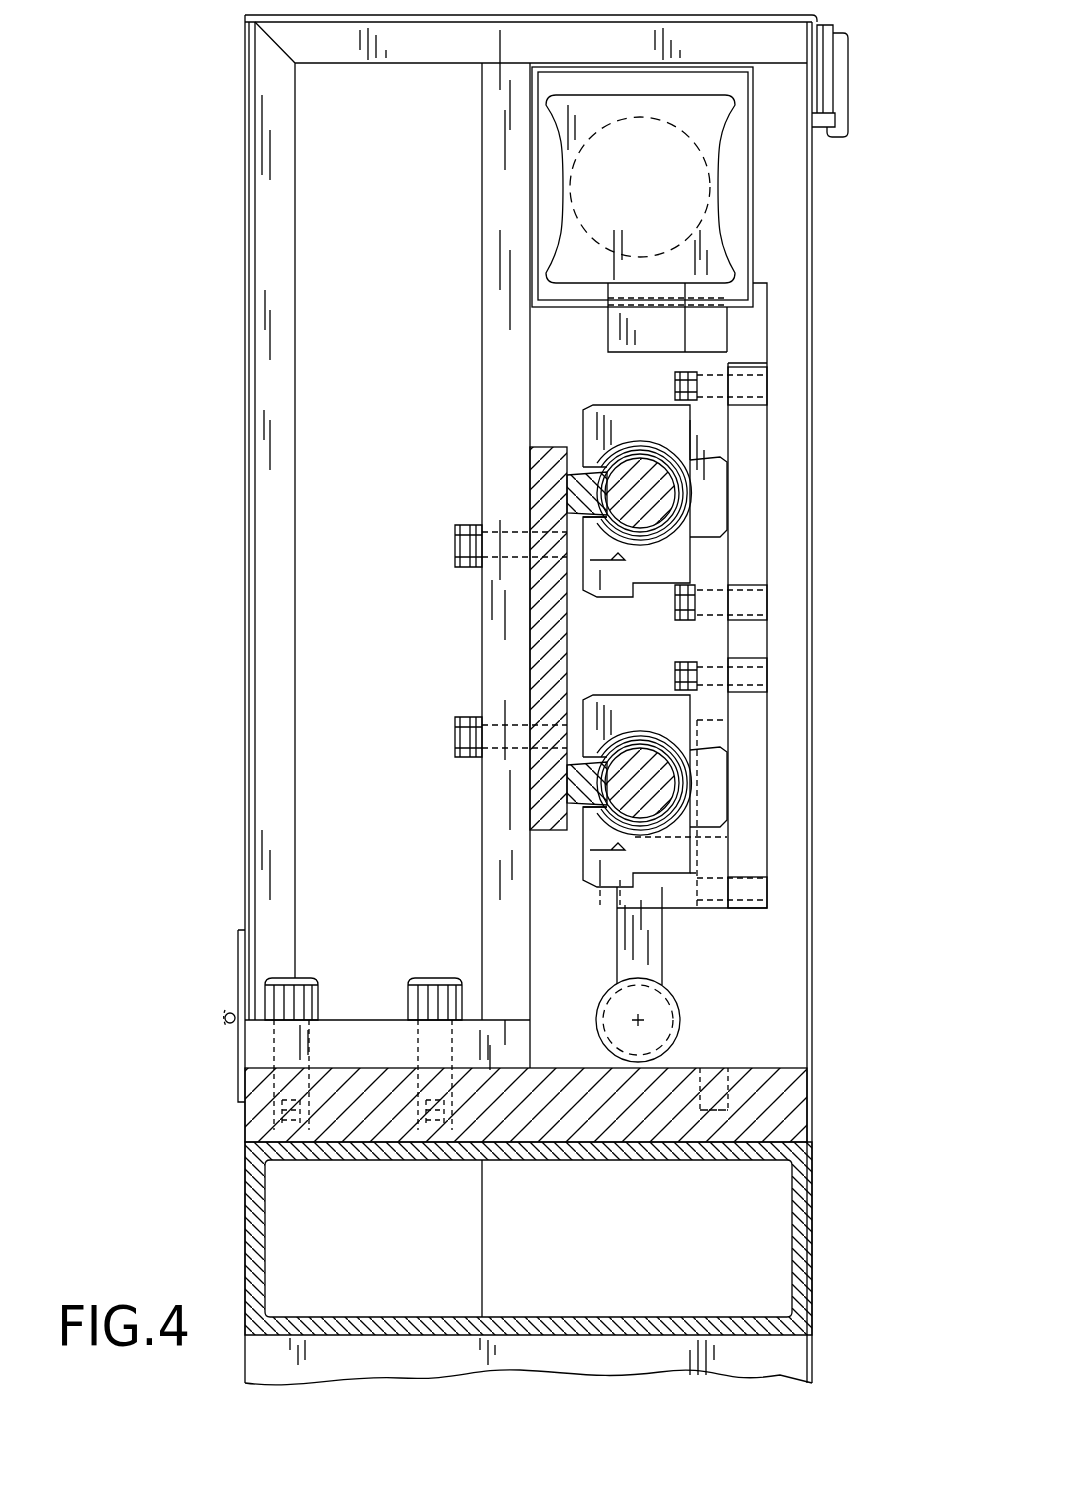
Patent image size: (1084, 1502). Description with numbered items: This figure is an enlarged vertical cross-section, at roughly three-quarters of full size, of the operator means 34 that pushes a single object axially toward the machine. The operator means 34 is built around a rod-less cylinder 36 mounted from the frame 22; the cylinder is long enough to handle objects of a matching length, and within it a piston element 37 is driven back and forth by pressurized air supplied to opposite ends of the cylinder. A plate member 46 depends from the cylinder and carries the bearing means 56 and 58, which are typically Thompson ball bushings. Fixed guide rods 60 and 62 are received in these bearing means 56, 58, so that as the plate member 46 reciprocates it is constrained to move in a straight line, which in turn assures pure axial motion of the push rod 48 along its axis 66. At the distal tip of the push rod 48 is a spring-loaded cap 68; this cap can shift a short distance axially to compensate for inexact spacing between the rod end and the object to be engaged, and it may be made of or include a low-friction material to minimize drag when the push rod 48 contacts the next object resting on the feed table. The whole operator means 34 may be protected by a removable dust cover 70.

The frame 22 is at (245, 1222).
The operator means 34 is at (482, 223).
The rod-less cylinder 36 is at (730, 225).
The piston element 37 is at (717, 180).
The plate member 46 is at (768, 477).
The push rod 48 is at (662, 1018).
The bearing means 56 is at (717, 430).
The bearing means 58 is at (705, 703).
The guide rod 60 is at (690, 497).
The guide rod 62 is at (690, 780).
The axis 66 is at (657, 1000).
The spring-loaded cap 68 is at (672, 1037).
The removable dust cover 70 is at (245, 522).